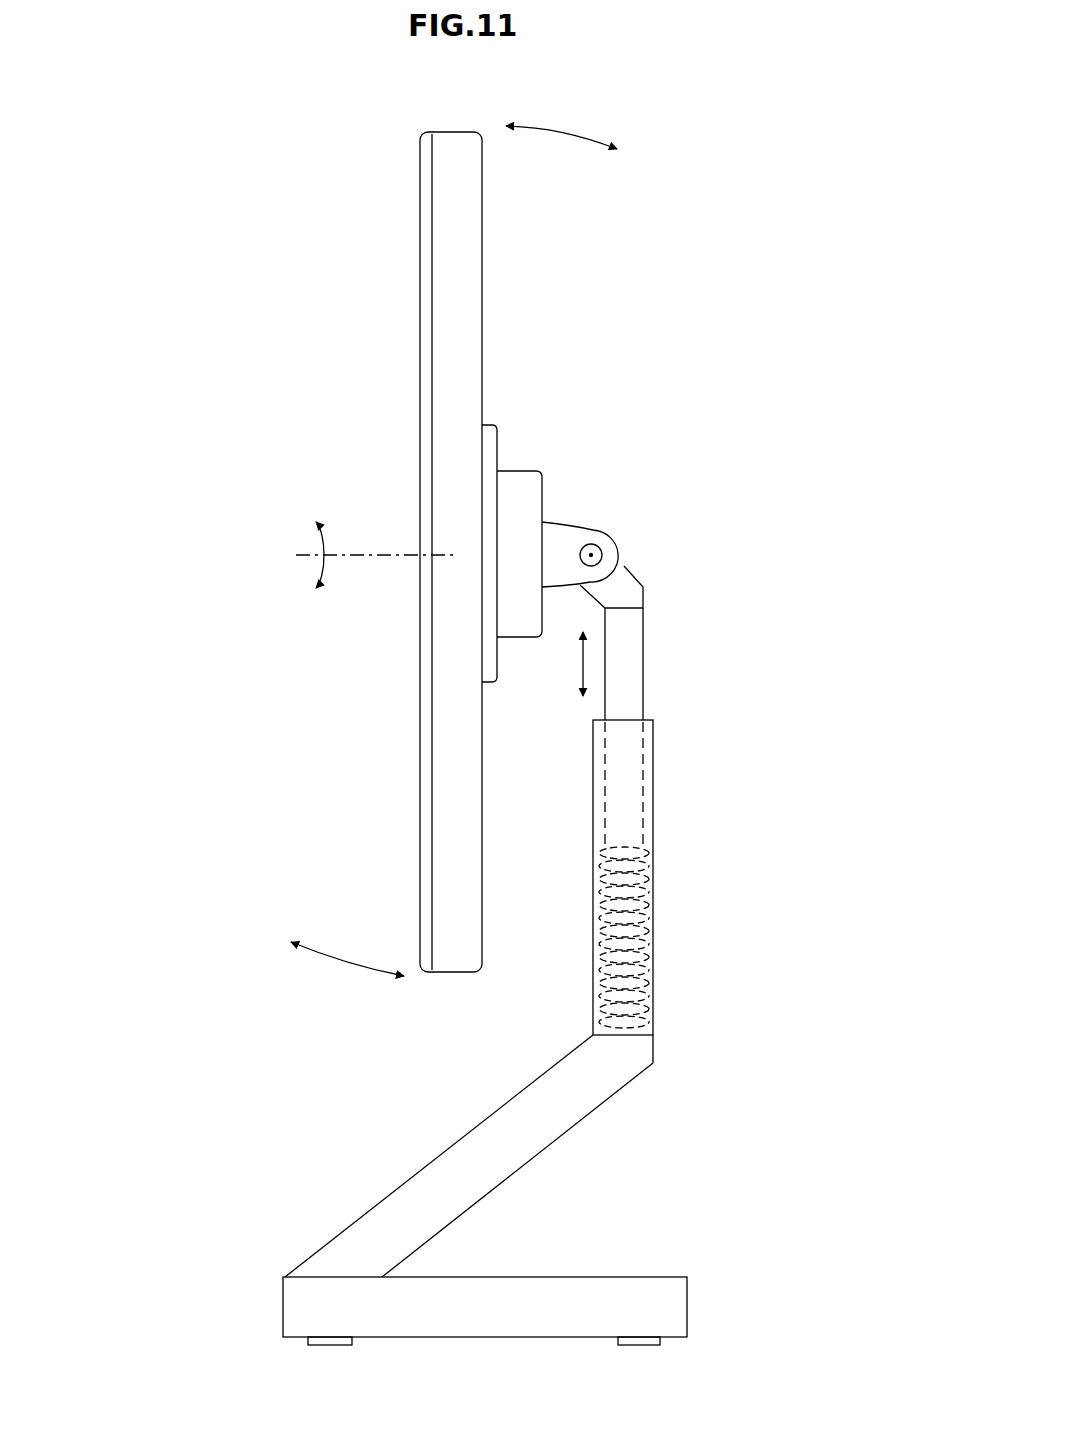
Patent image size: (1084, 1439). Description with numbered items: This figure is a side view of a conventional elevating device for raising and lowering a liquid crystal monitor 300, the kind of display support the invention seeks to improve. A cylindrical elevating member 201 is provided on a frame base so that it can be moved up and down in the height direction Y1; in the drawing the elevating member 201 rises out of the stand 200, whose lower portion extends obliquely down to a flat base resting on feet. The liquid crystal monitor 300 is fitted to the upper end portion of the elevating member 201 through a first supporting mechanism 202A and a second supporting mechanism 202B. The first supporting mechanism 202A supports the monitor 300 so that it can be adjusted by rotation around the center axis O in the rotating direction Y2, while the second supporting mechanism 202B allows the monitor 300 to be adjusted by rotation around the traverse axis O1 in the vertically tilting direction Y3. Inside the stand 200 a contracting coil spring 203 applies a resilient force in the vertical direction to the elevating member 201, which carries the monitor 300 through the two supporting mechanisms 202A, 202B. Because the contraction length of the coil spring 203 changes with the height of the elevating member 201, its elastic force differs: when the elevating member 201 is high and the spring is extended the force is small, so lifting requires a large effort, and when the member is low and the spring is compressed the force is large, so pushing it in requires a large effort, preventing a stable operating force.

The liquid crystal monitor 300 is at (419, 318).
The first supporting mechanism 202A is at (518, 471).
The second supporting mechanism 202B is at (583, 523).
The traverse axis O1 is at (592, 556).
The elevating member 201 is at (636, 664).
The stand 200 is at (656, 816).
The contracting coil spring 203 is at (657, 937).
The center axis O is at (363, 556).
The height direction Y1 is at (561, 664).
The rotating direction Y2 is at (314, 574).
The vertically tilting direction Y3 is at (454, 553).